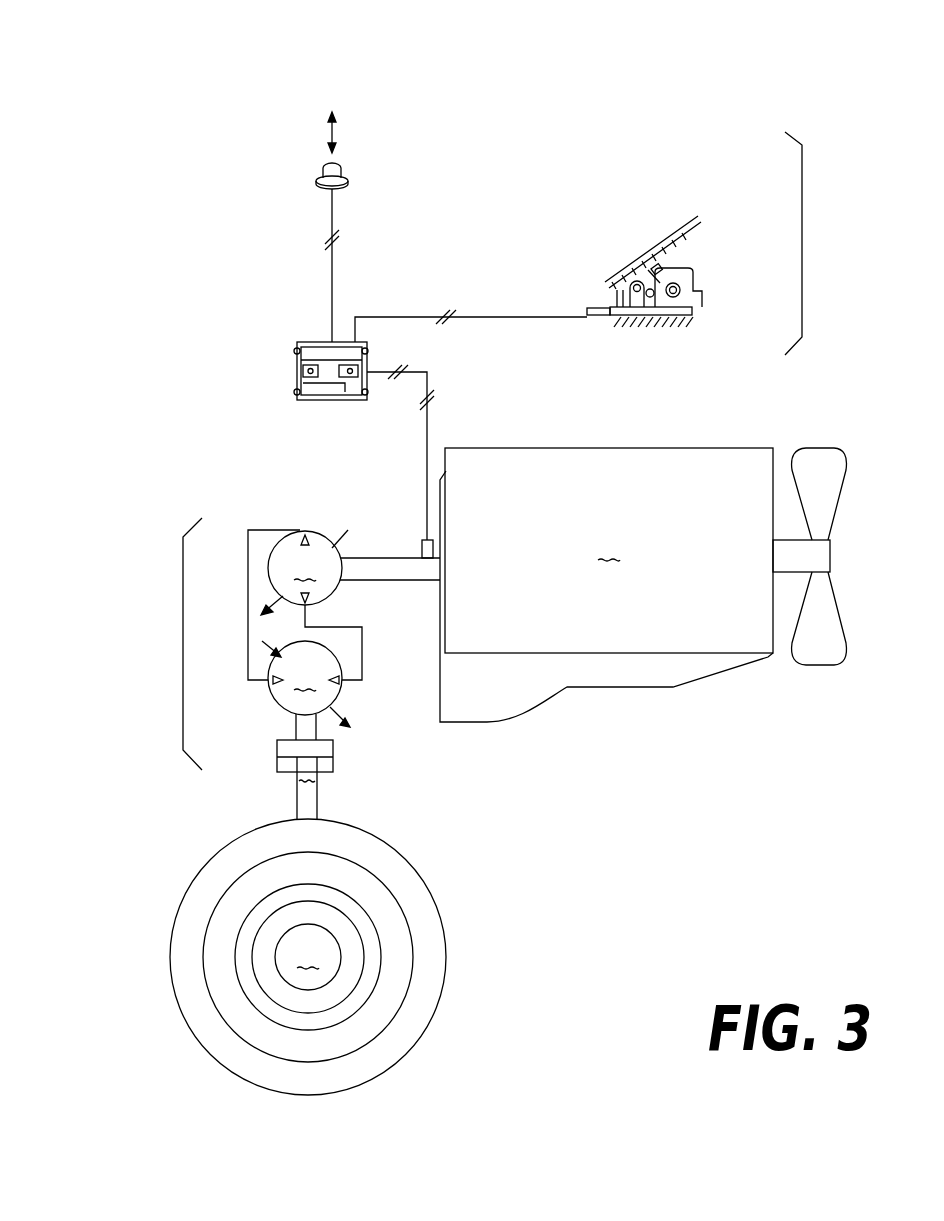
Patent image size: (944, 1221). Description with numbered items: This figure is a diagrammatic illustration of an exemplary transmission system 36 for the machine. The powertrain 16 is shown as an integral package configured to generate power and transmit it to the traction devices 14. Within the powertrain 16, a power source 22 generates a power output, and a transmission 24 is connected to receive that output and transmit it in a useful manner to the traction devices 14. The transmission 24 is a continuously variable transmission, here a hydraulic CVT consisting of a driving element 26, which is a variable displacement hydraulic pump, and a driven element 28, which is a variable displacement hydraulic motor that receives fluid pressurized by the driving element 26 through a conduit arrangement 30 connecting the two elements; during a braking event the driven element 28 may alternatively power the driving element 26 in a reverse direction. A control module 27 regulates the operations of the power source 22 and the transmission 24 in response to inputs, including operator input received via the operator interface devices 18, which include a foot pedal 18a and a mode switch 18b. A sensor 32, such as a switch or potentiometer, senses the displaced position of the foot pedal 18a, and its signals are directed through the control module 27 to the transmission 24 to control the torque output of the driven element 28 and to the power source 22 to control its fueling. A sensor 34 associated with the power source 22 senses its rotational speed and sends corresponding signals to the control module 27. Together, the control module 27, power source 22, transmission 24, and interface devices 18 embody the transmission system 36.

The traction devices 14 is at (308, 917).
The powertrain 16 is at (619, 736).
The operator interface devices 18 is at (802, 200).
The foot pedal 18a is at (700, 216).
The mode switch 18b is at (346, 170).
The power source 22 is at (646, 556).
The transmission 24 is at (183, 638).
The driving element 26 is at (350, 572).
The control module 27 is at (297, 372).
The driven element 28 is at (306, 690).
The hydraulic circuit 30 is at (268, 528).
The sensor 32 is at (590, 307).
The sensor 34 is at (422, 542).
The transmission system 36 is at (85, 90).